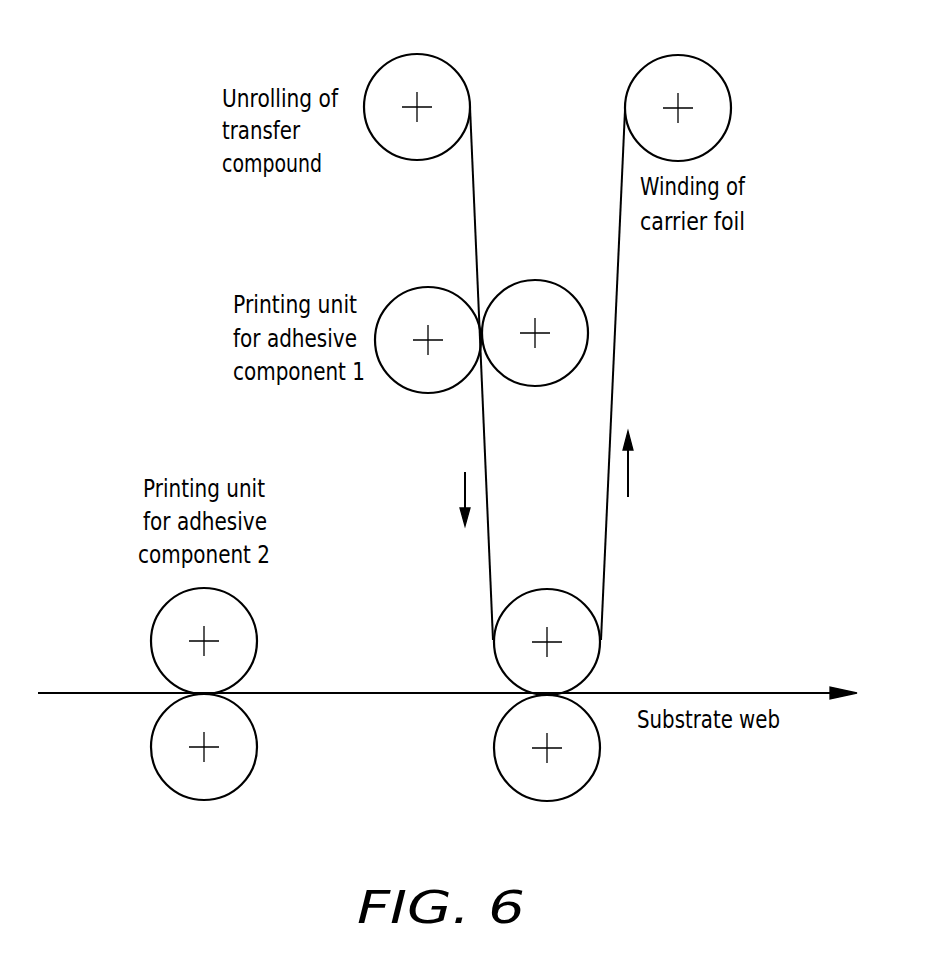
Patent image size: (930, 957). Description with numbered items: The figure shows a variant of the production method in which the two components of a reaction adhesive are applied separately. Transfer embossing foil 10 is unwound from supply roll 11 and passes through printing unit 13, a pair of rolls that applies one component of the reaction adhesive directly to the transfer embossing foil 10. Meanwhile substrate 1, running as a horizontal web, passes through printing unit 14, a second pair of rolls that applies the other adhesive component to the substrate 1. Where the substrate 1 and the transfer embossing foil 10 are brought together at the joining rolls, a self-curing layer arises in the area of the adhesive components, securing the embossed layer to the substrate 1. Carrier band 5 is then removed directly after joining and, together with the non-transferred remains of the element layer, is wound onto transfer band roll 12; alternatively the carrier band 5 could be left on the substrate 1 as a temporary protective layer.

The substrate 1 is at (678, 693).
The carrier band 5 is at (613, 402).
The transfer embossing foil 10 is at (475, 200).
The supply roll 11 is at (388, 68).
The transfer band roll 12 is at (702, 82).
The printing unit 13 is at (504, 269).
The printing unit 14 is at (163, 620).